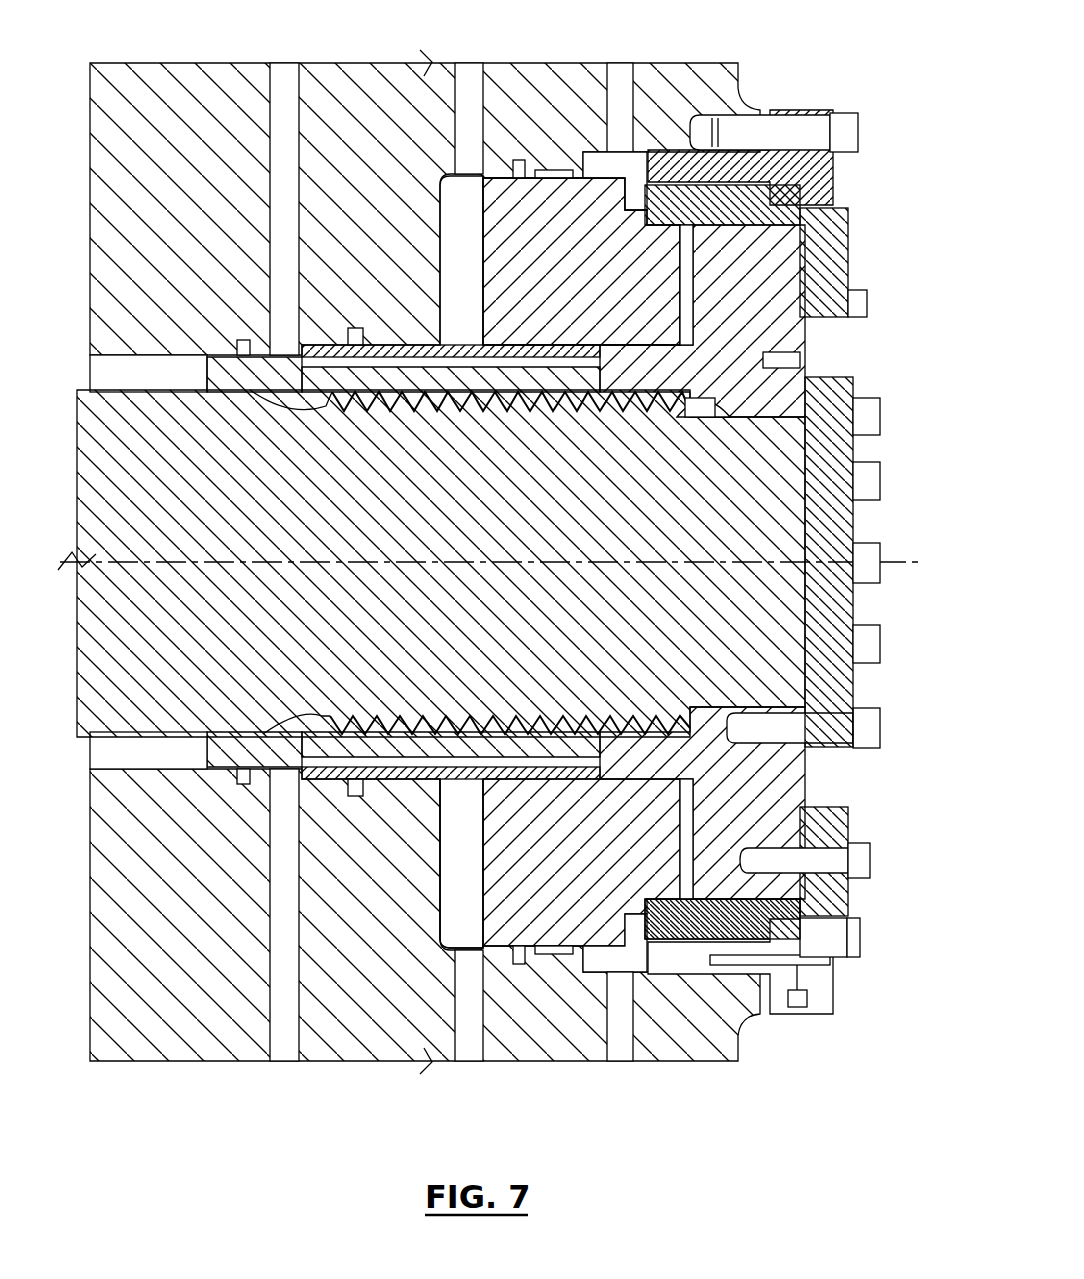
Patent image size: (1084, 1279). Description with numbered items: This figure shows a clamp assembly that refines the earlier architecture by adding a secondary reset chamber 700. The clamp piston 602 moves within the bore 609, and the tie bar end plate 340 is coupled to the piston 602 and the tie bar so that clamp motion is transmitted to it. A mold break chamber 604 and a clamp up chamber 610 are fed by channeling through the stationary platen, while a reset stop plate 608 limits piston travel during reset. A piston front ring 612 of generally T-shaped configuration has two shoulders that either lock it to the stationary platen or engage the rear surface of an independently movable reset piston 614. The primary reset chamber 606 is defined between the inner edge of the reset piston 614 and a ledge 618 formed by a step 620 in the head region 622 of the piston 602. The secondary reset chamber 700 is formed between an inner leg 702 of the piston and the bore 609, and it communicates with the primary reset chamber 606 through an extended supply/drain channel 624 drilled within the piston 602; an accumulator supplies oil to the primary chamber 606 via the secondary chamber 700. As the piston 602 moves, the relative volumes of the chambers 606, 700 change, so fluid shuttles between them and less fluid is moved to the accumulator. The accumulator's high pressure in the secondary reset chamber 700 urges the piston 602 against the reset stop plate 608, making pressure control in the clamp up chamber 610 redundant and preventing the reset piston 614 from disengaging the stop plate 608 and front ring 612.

The tie bar end plate 340 is at (838, 532).
The piston 602 is at (490, 383).
The mold break chamber 604 is at (645, 176).
The reset chamber 606 is at (652, 226).
The reset stop plate 608 is at (845, 240).
The bore 609 is at (487, 932).
The clamp up chamber 610 is at (463, 212).
The piston front ring 612 is at (830, 172).
The reset piston 614 is at (770, 200).
The ledge 618 is at (715, 845).
The step 620 is at (605, 158).
The head region 622 is at (582, 249).
The supply/drain channel 624 is at (716, 402).
The secondary reset chamber 700 is at (272, 356).
The inner leg 702 is at (368, 386).